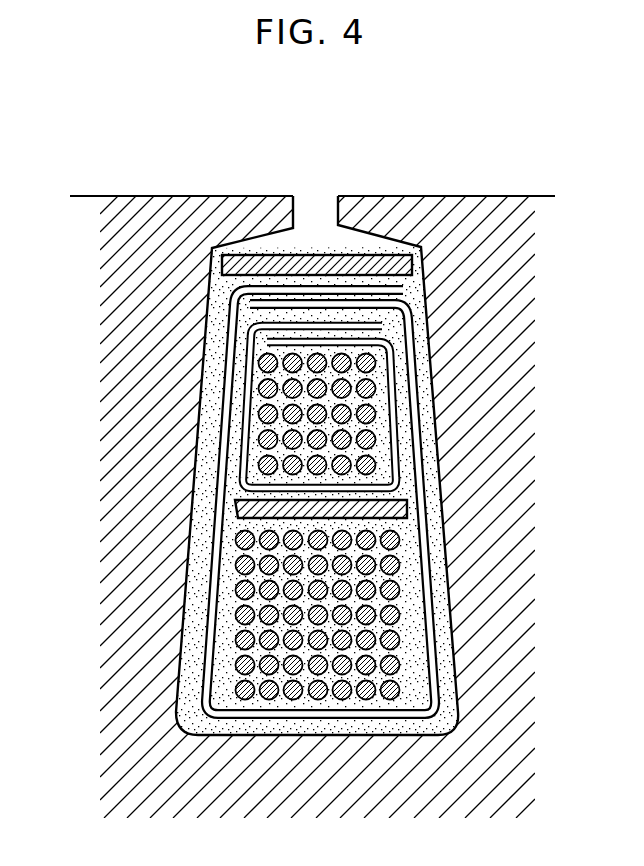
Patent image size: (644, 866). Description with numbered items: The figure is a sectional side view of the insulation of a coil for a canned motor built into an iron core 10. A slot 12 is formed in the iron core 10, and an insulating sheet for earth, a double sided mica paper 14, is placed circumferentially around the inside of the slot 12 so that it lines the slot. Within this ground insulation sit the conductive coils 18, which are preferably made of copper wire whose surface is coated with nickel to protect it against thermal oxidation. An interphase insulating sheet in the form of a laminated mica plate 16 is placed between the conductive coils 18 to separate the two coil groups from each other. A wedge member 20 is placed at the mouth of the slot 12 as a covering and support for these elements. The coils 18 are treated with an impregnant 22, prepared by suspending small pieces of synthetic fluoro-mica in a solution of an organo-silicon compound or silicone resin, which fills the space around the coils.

The iron core 10 is at (493, 235).
The slot 12 is at (432, 444).
The double sided mica paper 14 is at (442, 556).
The laminated mica plate 16 is at (242, 513).
The conductive coils 18 is at (262, 416).
The wedge member 20 is at (237, 265).
The impregnant 22 is at (420, 670).